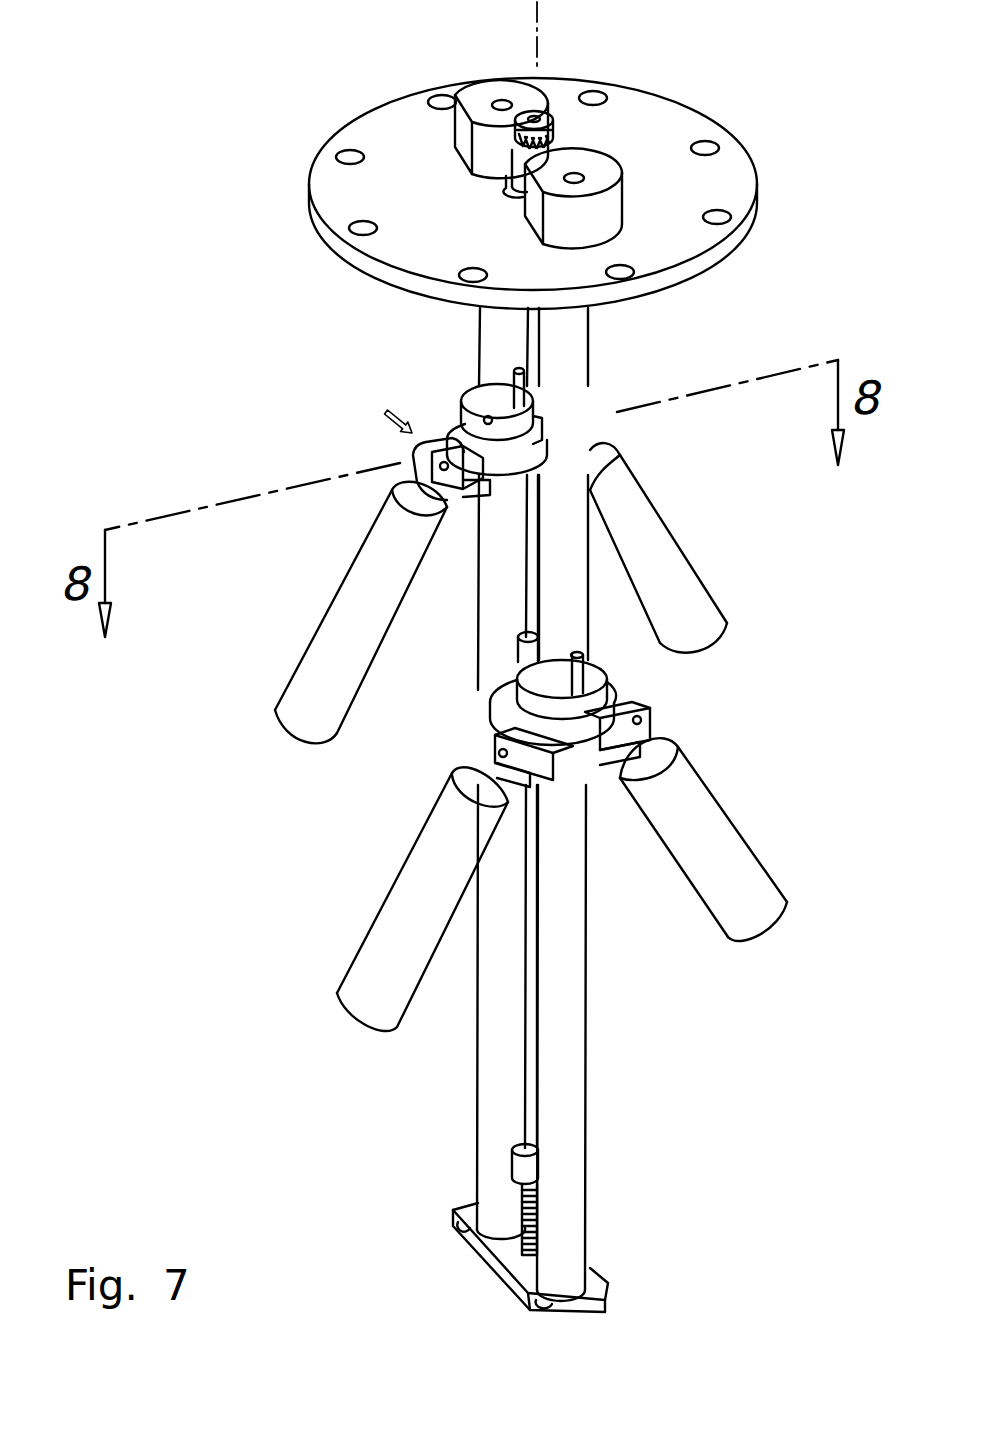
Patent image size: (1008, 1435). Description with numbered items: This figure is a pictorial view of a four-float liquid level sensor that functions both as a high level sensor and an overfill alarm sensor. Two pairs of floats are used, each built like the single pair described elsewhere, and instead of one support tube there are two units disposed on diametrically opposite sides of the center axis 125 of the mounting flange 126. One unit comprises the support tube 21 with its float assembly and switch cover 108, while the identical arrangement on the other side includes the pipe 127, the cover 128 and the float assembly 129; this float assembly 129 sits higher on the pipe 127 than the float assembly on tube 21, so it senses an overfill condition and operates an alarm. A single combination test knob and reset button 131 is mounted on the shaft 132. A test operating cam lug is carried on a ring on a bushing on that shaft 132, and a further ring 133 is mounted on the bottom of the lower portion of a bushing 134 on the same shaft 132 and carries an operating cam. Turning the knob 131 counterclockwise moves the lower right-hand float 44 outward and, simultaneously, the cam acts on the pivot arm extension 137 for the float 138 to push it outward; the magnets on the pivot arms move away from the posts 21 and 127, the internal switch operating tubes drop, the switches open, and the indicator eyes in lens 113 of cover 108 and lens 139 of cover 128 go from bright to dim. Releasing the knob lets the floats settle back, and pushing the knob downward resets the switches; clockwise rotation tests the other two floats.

The support tube 21 is at (573, 587).
The lower right-hand float 44 is at (700, 860).
The switch cover 108 is at (607, 200).
The lens 113 is at (578, 177).
The axis 125 is at (545, 33).
The mounting flange 126 is at (712, 258).
The pipe 127 is at (495, 625).
The cover 128 is at (455, 130).
The float assembly 129 is at (366, 419).
The combination test knob and reset button 131 is at (540, 120).
The shaft 132 is at (540, 553).
The ring 133 is at (517, 512).
The bushing 134 is at (472, 388).
The pivot arm extension 137 is at (452, 457).
The float 138 is at (310, 697).
The lens 139 is at (502, 100).